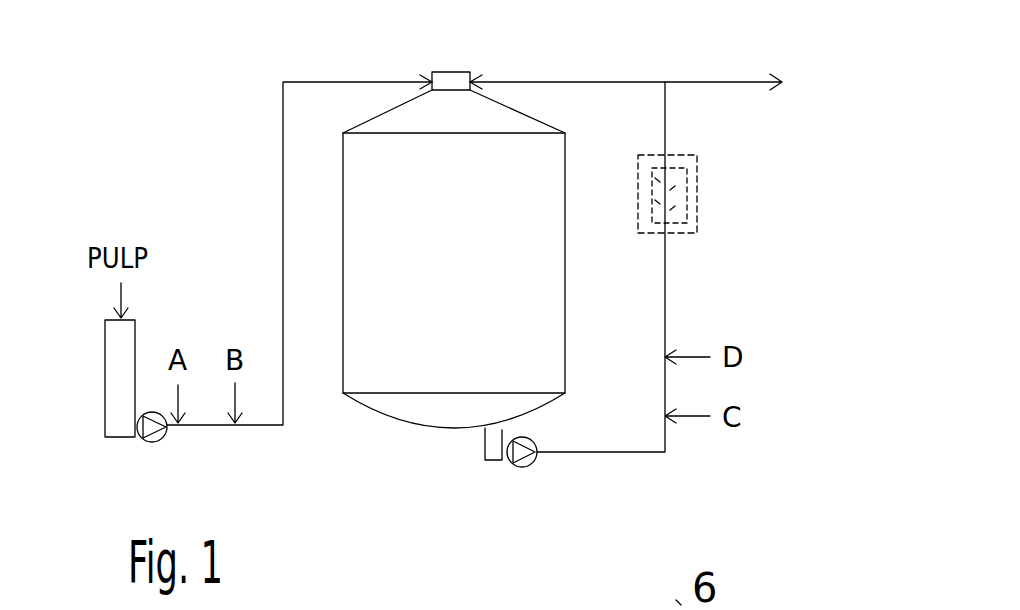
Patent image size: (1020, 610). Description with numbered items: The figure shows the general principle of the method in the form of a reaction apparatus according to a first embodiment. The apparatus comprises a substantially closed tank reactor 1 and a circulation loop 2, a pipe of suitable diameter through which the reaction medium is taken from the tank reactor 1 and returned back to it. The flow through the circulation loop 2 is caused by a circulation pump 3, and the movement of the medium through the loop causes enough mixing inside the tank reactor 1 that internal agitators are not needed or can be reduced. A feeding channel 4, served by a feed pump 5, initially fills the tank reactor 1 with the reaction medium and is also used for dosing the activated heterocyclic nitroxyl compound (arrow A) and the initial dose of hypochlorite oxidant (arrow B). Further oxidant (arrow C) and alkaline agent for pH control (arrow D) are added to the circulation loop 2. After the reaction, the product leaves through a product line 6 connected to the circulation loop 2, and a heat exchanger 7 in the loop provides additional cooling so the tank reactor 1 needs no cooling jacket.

The tank reactor 1 is at (360, 350).
The circulation loop 2 is at (583, 82).
The circulation pump 3 is at (530, 466).
The feeding channel 4 is at (282, 215).
The feed pump 5 is at (160, 440).
The product line 6 is at (733, 78).
The heat exchanger 7 is at (675, 155).